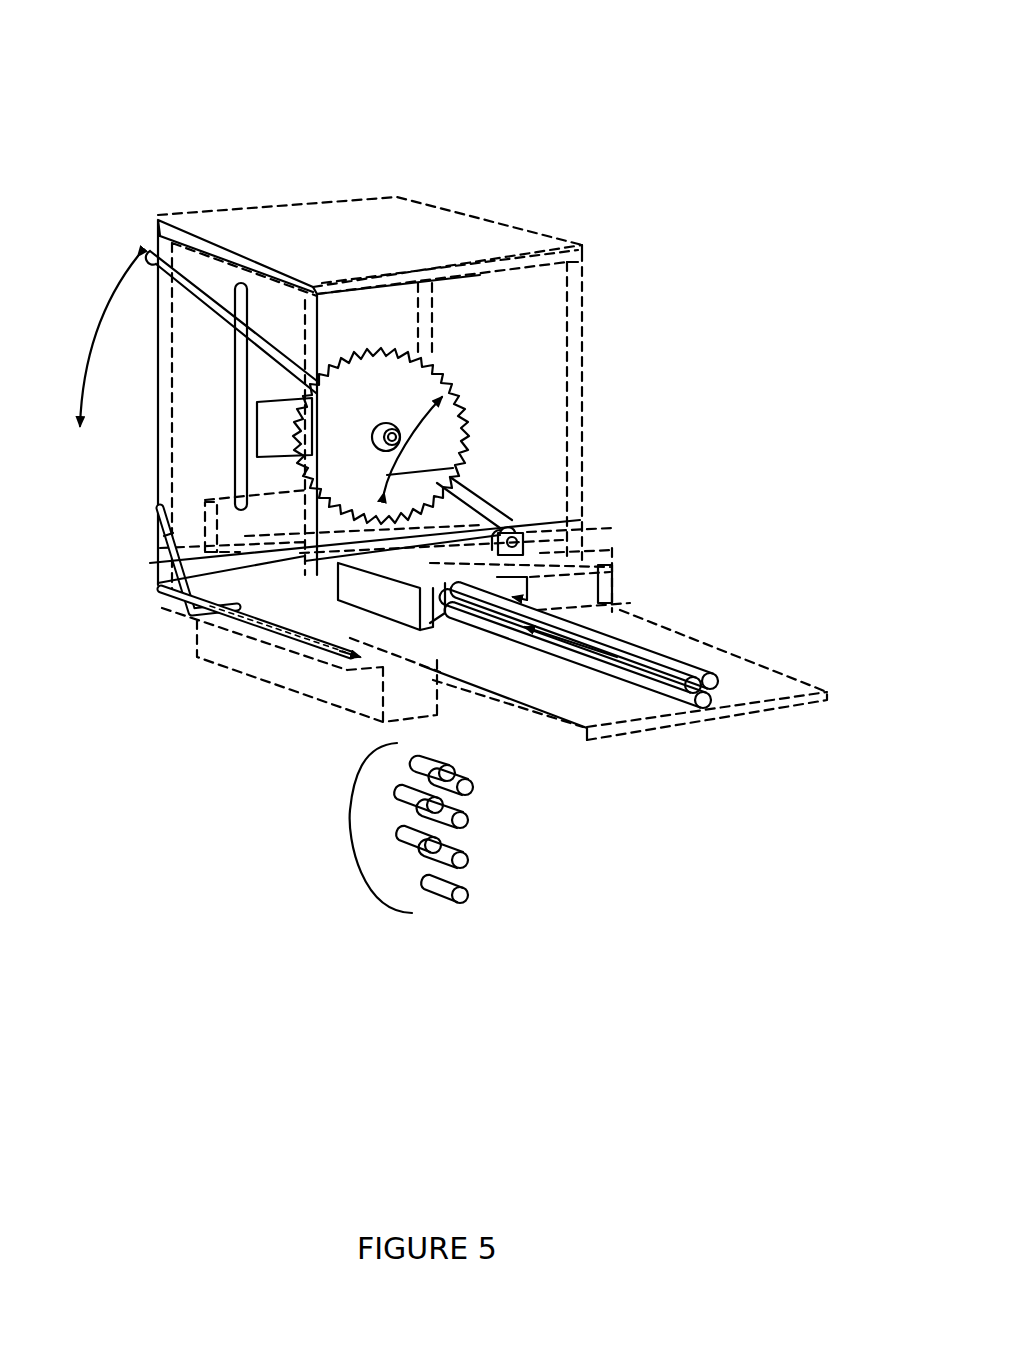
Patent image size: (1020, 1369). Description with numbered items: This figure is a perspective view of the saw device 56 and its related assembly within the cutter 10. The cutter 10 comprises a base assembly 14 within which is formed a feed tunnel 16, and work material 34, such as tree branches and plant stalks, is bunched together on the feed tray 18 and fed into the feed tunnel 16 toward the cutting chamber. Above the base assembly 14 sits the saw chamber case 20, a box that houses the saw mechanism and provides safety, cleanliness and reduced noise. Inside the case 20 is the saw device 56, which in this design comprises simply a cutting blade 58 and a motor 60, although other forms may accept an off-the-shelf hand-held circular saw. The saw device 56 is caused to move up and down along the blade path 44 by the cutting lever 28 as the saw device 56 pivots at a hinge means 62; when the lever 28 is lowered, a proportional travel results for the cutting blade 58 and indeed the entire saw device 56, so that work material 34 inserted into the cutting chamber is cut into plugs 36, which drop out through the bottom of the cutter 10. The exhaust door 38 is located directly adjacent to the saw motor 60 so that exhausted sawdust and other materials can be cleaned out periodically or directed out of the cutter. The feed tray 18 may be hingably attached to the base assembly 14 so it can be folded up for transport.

The cutter 10 is at (568, 96).
The saw chamber case 20 is at (297, 228).
The cutting lever 28 is at (150, 246).
The saw device 56 is at (447, 333).
The cutting blade 58 is at (453, 470).
The blade path 44 is at (445, 422).
The hinge means 62 is at (522, 528).
The motor 60 is at (275, 443).
The exhaust door 38 is at (243, 537).
The base assembly 14 is at (307, 655).
The feed tunnel 16 is at (560, 608).
The feed tray 18 is at (760, 690).
The work material 34 is at (672, 678).
The plugs 36 is at (348, 836).